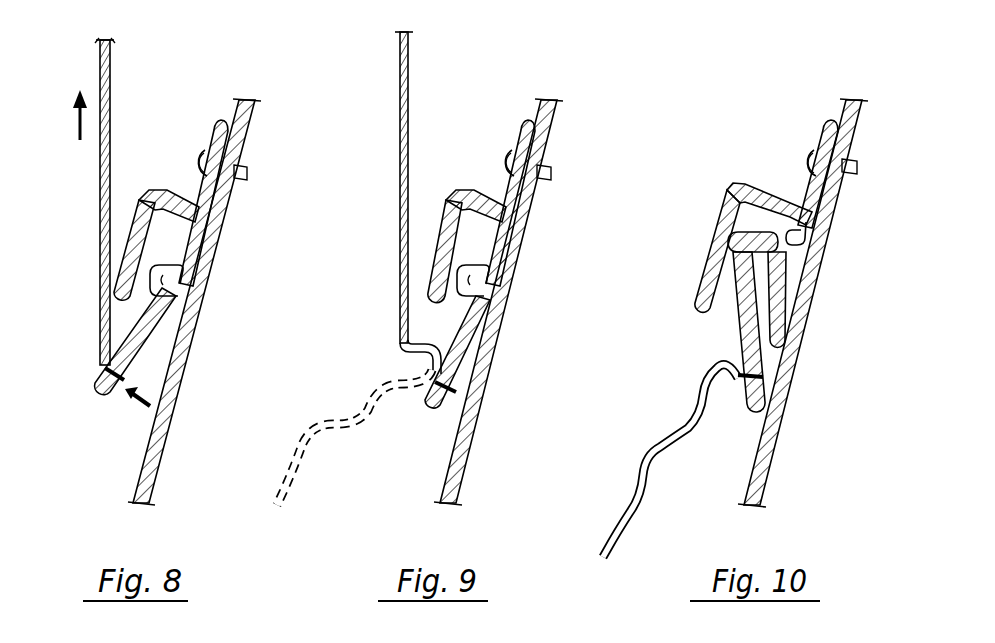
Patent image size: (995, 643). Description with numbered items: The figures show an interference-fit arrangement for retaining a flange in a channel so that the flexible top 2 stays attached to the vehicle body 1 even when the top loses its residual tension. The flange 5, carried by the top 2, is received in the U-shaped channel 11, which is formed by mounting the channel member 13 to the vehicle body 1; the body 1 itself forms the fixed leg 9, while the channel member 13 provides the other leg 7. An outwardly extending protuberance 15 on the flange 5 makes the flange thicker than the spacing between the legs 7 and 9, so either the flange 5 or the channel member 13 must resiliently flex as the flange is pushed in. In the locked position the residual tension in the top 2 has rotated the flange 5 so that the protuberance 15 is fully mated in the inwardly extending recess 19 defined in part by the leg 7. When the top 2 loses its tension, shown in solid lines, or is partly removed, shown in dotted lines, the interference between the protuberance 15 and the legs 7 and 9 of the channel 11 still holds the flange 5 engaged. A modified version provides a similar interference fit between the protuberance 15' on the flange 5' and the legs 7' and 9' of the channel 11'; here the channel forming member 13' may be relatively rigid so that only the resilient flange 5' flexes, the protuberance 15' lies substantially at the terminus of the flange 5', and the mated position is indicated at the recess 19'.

In FIG. 8, the vehicle body 1 is at (226, 245).
In FIG. 9, the vehicle body 1 is at (535, 225).
In FIG. 10, the vehicle body 1 is at (838, 227).
In FIG. 8, the flexible top 2 is at (97, 229).
In FIG. 9, the flexible top 2 is at (398, 212).
In FIG. 10, the flexible top 2 is at (624, 503).
In FIG. 8, the flange 5 is at (109, 337).
In FIG. 9, the flange 5 is at (411, 346).
In FIG. 9, the leg 7 is at (399, 251).
In FIG. 9, the leg 9 is at (525, 218).
In FIG. 9, the U-shaped channel 11 is at (469, 176).
In FIG. 9, the channel member 13 is at (463, 154).
In FIG. 8, the protuberance 15 is at (211, 276).
In FIG. 9, the protuberance 15 is at (520, 269).
In FIG. 8, the inwardly extending recess 19 is at (168, 154).
In FIG. 10, the flange 5' is at (701, 332).
In FIG. 10, the leg 7' is at (690, 243).
In FIG. 10, the leg 9' is at (827, 303).
In FIG. 10, the channel 11' is at (767, 161).
In FIG. 10, the channel forming member 13' is at (755, 162).
In FIG. 10, the protuberance 15' is at (811, 274).
In FIG. 10, the recess 19' is at (843, 249).